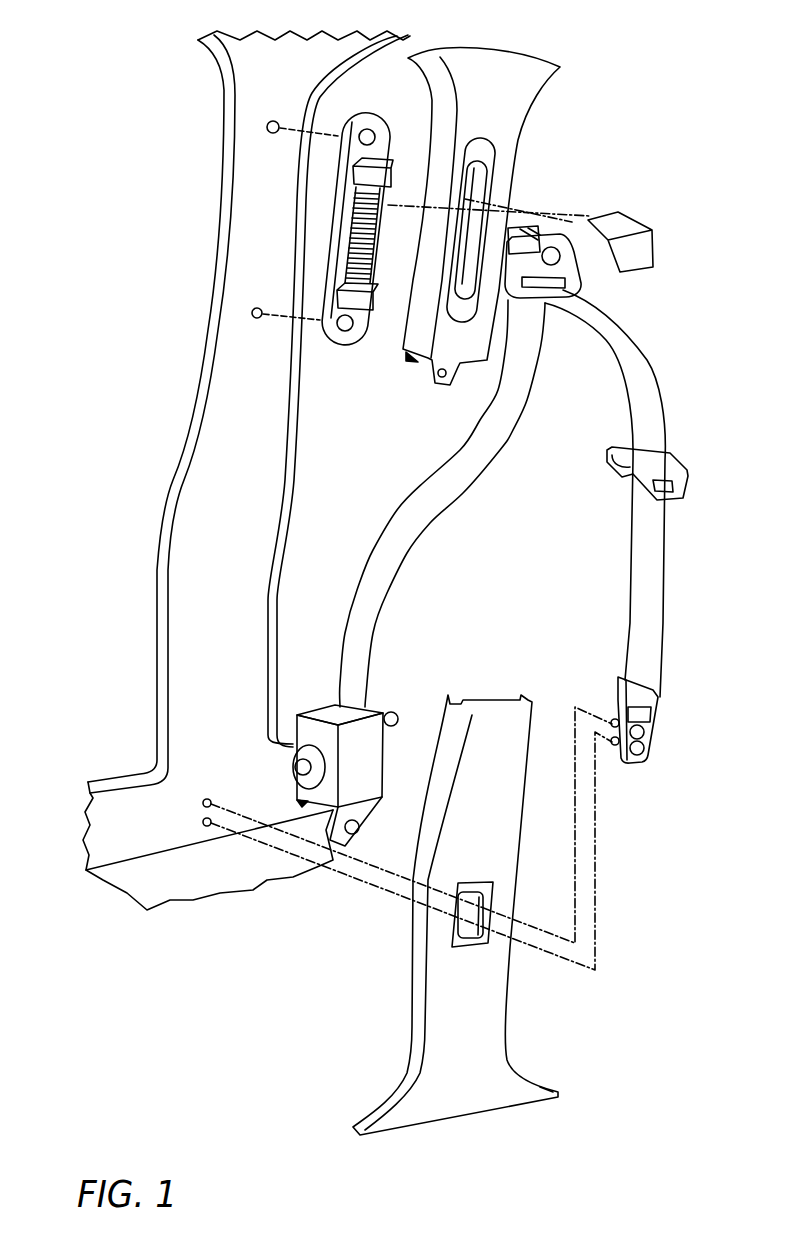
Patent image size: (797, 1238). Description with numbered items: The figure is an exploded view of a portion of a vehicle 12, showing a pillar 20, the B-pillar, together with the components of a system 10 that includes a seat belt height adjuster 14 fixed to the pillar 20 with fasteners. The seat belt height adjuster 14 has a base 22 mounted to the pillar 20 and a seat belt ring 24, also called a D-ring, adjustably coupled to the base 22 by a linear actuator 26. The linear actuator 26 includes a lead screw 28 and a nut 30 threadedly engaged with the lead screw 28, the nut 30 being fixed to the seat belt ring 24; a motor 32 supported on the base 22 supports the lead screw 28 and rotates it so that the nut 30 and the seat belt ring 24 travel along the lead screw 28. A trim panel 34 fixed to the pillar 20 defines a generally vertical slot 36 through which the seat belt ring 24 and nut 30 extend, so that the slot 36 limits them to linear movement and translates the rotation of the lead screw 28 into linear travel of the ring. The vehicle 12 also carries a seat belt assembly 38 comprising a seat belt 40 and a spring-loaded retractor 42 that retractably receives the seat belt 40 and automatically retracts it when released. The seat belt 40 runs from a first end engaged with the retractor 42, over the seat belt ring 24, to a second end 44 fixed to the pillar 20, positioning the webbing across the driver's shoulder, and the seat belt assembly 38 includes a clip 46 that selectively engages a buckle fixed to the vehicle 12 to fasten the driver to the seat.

The system 10 is at (710, 112).
The vehicle 12 is at (92, 886).
The seat belt height adjuster 14 is at (347, 265).
The pillar 20 is at (228, 479).
The base 22 is at (362, 113).
The seat belt ring 24 is at (580, 278).
The linear actuator 26 is at (378, 316).
The lead screw 28 is at (353, 233).
The nut 30 is at (518, 240).
The motor 32 is at (340, 297).
The trim panel 34 is at (476, 577).
The slot 36 is at (483, 177).
The seat belt assembly 38 is at (545, 526).
The seat belt 40 is at (647, 387).
The retractor 42 is at (368, 740).
The second end 44 is at (652, 697).
The clip 46 is at (688, 472).